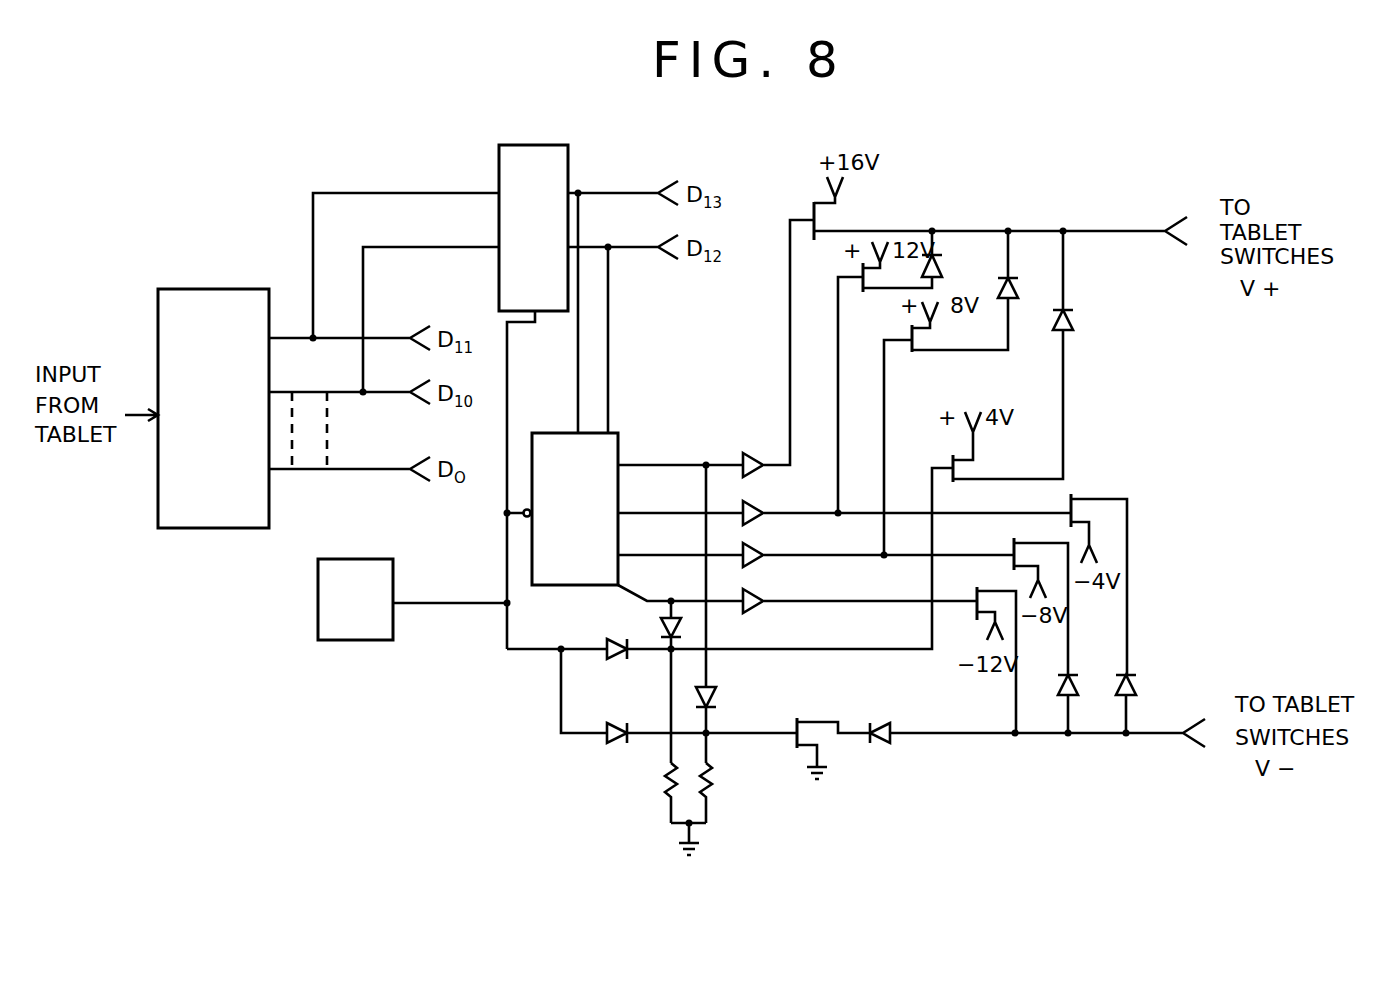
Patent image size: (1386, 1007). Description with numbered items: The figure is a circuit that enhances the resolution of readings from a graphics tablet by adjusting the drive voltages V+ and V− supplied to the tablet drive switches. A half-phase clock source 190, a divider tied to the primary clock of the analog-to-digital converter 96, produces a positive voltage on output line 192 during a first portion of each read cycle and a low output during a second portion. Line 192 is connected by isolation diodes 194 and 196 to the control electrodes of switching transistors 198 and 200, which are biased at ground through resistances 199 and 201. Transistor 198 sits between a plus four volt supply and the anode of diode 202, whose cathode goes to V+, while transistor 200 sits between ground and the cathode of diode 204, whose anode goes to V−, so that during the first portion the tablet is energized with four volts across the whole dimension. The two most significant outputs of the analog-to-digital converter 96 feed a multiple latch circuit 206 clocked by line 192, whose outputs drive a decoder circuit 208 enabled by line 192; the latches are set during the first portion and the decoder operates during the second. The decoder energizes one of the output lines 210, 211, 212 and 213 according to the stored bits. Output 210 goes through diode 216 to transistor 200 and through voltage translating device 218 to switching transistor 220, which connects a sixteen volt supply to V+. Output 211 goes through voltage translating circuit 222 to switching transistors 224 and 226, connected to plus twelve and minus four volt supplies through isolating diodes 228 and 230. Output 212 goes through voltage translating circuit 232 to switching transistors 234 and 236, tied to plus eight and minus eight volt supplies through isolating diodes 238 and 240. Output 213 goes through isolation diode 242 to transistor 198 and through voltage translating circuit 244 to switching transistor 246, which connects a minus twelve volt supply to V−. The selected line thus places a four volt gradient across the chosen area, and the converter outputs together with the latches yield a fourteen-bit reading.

The analog-to-digital converter 96 is at (208, 289).
The multiple latch circuit 206 is at (555, 145).
The decoder circuit 208 is at (618, 448).
The output line 210 is at (650, 465).
The output line 211 is at (645, 513).
The output line 212 is at (645, 555).
The output line 213 is at (641, 601).
The voltage translating device 218 is at (757, 460).
The switching transistor 220 is at (822, 223).
The voltage translating circuit 222 is at (760, 512).
The switching transistor 224 is at (866, 292).
The switching transistor 226 is at (1080, 505).
The isolating diode 228 is at (940, 272).
The isolating diode 230 is at (1133, 682).
The voltage translating circuit 232 is at (760, 554).
The switching transistor 234 is at (918, 352).
The switching transistor 236 is at (1012, 565).
The isolating diode 238 is at (1015, 292).
The isolating diode 240 is at (1074, 681).
The isolation diode 242 is at (662, 628).
The voltage translating circuit 244 is at (760, 600).
The switching transistor 246 is at (978, 614).
The φ/2 source 190 is at (370, 640).
The output line 192 is at (435, 603).
The isolation diode 194 is at (615, 657).
The isolation diode 196 is at (615, 742).
The switching transistor 198 is at (962, 466).
The resistance 199 is at (666, 780).
The switching transistor 200 is at (805, 720).
The resistance 201 is at (712, 777).
The diode 202 is at (1074, 320).
The diode 204 is at (878, 723).
The diode 216 is at (718, 695).